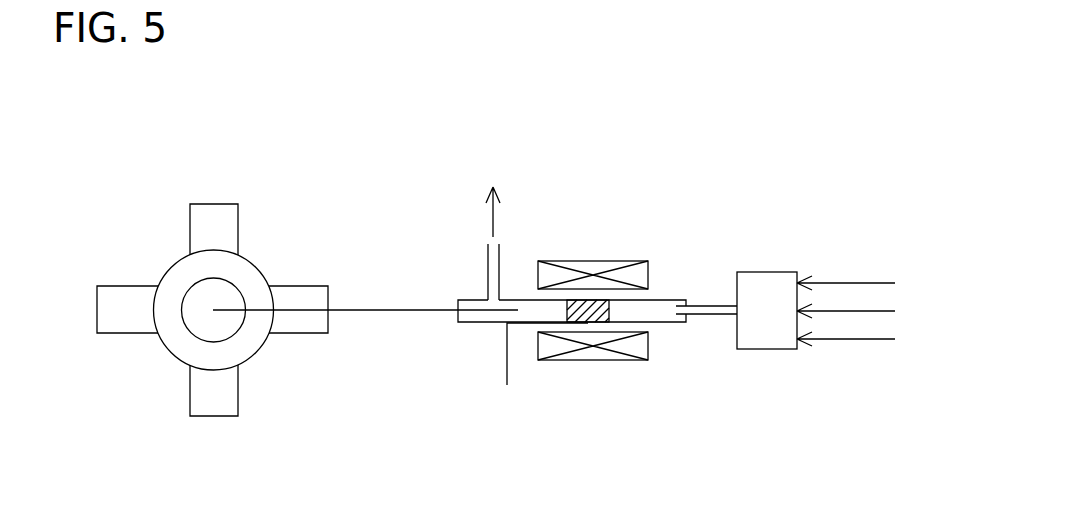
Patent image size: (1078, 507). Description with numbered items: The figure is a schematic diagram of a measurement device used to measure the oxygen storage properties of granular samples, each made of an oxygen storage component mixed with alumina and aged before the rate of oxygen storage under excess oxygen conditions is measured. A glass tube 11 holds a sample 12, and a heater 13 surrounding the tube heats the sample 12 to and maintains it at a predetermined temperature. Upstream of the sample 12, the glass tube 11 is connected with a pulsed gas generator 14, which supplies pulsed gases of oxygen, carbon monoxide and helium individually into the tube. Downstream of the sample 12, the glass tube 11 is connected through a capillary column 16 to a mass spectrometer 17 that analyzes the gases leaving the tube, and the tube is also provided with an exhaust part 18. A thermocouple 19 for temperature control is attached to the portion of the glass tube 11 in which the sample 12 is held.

The glass tube 11 is at (665, 298).
The sample 12 is at (598, 297).
The heater 13 is at (595, 360).
The pulsed gas generator 14 is at (770, 272).
The capillary column 16 is at (397, 308).
The mass spectrometer 17 is at (213, 204).
The exhaust part 18 is at (489, 267).
The thermocouple 19 is at (507, 367).